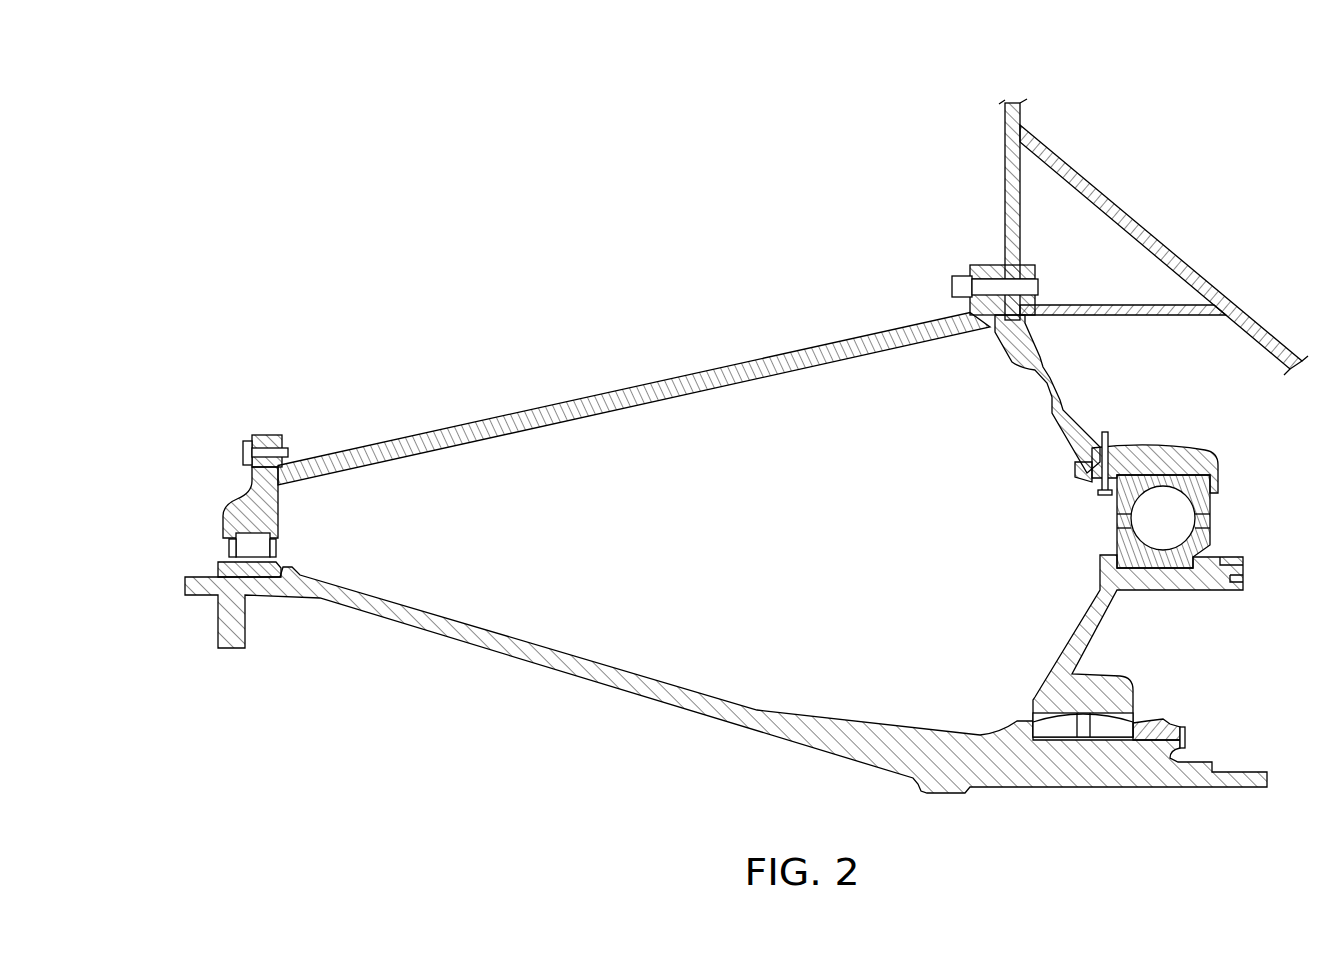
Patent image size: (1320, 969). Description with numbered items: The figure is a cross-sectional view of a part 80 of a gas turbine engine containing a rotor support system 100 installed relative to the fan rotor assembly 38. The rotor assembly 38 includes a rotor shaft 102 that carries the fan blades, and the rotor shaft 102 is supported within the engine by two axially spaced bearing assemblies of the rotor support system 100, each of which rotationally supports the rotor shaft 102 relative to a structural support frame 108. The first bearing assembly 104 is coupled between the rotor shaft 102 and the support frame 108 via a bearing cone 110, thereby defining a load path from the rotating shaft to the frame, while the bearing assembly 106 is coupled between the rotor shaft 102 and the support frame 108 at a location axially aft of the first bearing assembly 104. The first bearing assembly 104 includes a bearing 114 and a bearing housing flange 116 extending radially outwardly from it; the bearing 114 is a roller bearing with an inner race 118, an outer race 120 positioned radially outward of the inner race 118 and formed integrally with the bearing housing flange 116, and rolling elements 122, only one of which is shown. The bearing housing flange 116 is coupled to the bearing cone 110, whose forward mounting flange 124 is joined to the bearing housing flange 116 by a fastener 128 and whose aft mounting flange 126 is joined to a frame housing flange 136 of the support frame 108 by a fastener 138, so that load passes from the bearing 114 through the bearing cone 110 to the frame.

The part of the gas turbine engine 80 is at (263, 97).
The fan rotor assembly 38 is at (474, 670).
The rotor support system 100 is at (722, 346).
The rotor shaft 102 is at (607, 684).
The first bearing assembly 104 is at (325, 520).
The bearing assembly 106 is at (1063, 522).
The structural support frame 108 is at (1005, 152).
The bearing cone 110 is at (498, 412).
The bearing 114 is at (293, 550).
The bearing housing flange 116 is at (221, 487).
The inner race 118 is at (218, 569).
The outer race 120 is at (223, 527).
The rolling elements 122 is at (229, 550).
The forward mounting flange 124 is at (278, 440).
The aft mounting flange 126 is at (978, 264).
The fastener 128 is at (243, 452).
The frame housing flange 136 is at (1013, 258).
The fastener 138 is at (1040, 286).